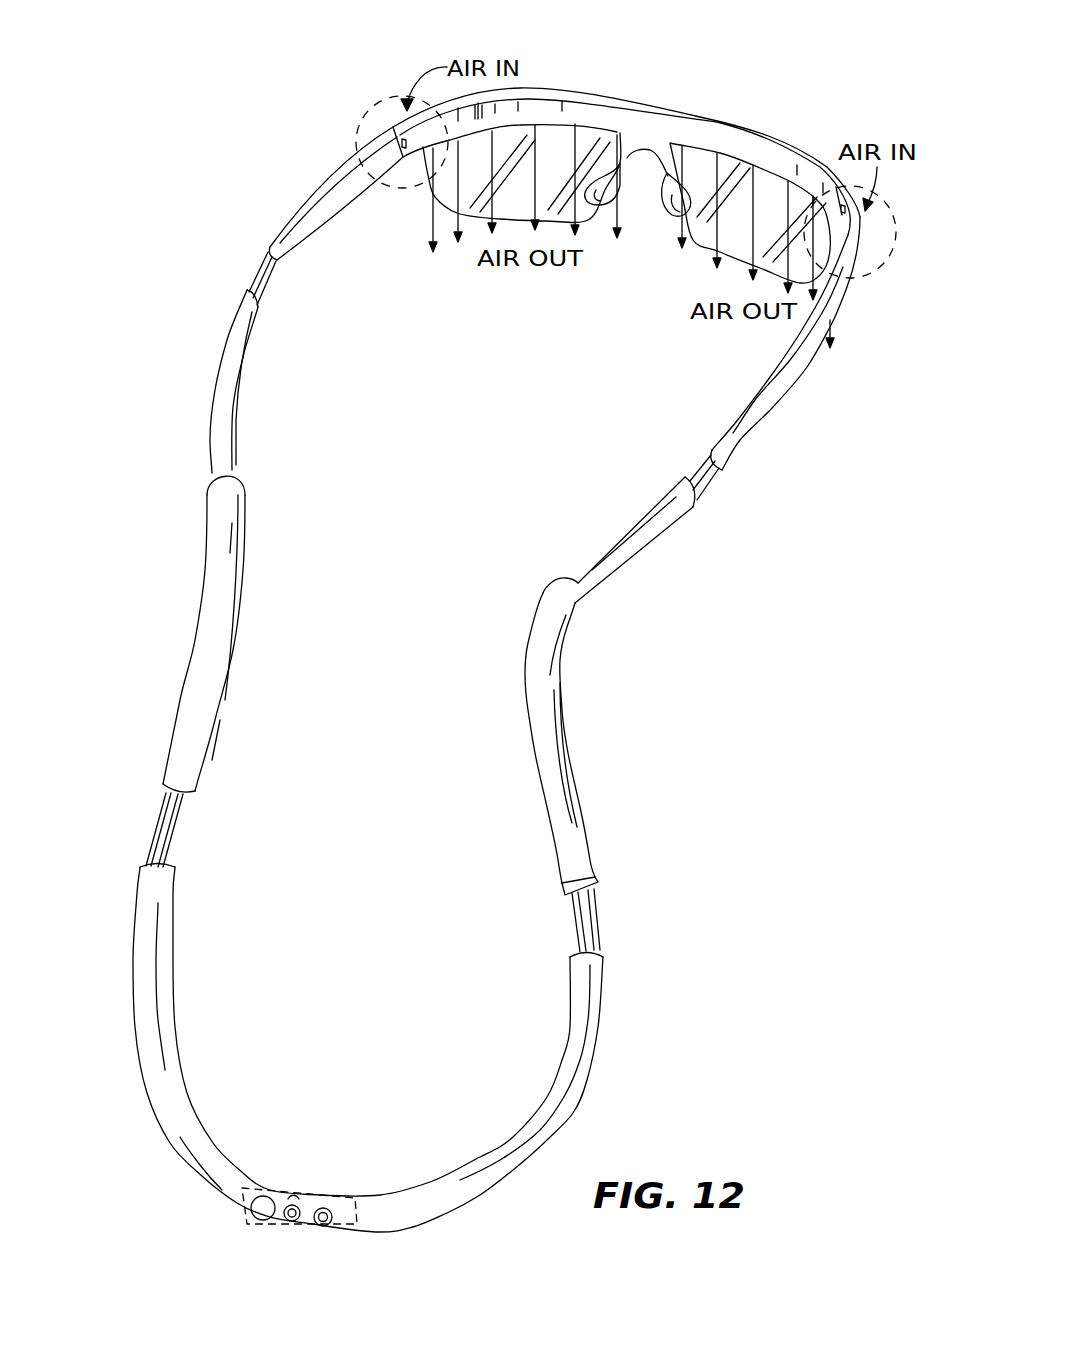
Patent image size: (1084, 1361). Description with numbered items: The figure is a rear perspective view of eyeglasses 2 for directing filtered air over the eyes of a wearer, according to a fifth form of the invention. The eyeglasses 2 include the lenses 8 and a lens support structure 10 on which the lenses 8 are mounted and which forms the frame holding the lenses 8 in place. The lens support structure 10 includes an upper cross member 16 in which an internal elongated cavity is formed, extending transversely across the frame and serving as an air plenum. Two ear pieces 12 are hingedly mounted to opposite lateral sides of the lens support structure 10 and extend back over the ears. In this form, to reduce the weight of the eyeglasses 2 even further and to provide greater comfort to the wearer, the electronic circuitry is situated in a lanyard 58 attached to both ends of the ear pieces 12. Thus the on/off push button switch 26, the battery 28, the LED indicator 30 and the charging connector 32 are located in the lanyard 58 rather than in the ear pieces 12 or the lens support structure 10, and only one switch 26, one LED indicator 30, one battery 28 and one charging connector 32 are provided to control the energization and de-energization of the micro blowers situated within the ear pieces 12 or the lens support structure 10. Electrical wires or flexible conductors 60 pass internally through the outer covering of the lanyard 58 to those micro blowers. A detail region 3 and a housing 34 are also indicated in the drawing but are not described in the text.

The eyeglasses 2 is at (865, 275).
The detail region 3 is at (385, 193).
The lenses 8 is at (702, 250).
The lens support structure 10 is at (683, 110).
The ear pieces 12 is at (283, 218).
The upper cross member 16 is at (573, 103).
The on/off push button switch 26 is at (263, 1222).
The battery 28 is at (297, 1200).
The LED indicator 30 is at (292, 1222).
The charging connector 32 is at (325, 1226).
The housing 34 is at (343, 1197).
The lanyard 58 is at (192, 656).
The flexible conductors 60 is at (156, 816).